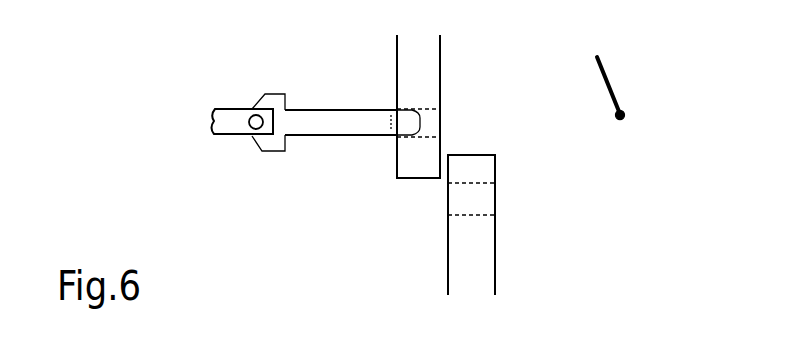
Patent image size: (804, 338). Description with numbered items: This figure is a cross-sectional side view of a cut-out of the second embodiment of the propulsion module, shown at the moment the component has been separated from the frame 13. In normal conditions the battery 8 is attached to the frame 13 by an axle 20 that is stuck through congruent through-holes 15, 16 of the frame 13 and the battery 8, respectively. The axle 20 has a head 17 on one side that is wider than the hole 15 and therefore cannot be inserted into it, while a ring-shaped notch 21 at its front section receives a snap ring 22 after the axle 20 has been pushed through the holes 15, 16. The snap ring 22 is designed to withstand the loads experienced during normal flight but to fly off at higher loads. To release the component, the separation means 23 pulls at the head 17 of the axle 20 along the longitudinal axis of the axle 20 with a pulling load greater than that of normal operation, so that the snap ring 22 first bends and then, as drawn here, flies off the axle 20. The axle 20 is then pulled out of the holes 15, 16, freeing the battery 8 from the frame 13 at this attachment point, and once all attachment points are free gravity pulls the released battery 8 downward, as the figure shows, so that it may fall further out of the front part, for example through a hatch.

The battery 8 is at (495, 240).
The frame 13 is at (413, 178).
The through-hole 15 is at (412, 108).
The through-hole 16 is at (482, 200).
The head 17 is at (278, 94).
The axle 20 is at (340, 108).
The ring-shaped notch 21 is at (393, 109).
The snap ring 22 is at (612, 82).
The separation means 23 is at (237, 135).